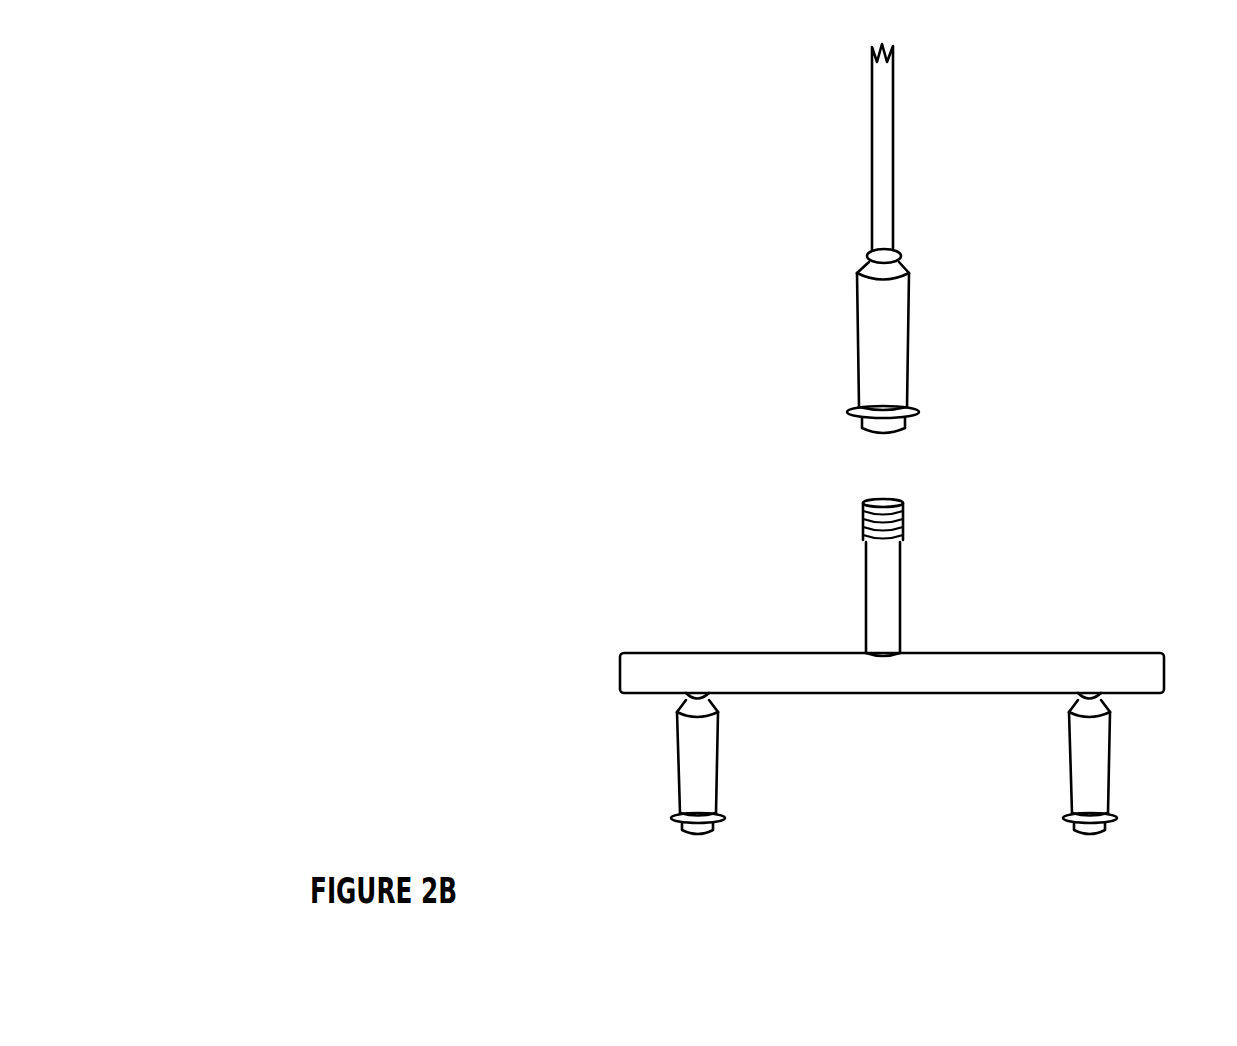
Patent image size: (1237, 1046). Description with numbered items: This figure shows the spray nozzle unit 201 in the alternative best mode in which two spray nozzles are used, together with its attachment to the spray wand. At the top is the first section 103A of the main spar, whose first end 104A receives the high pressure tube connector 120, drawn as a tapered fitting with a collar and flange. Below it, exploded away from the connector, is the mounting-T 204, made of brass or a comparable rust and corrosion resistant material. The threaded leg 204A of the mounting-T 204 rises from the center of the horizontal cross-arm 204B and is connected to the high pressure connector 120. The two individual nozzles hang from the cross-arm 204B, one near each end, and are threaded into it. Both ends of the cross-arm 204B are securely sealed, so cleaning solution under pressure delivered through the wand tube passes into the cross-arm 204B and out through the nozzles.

The first section 103A is at (948, 46).
The first end 104A is at (893, 213).
The high pressure tube connector 120 is at (910, 357).
The spray nozzle unit 201 is at (736, 421).
The mounting-T 204 is at (1066, 541).
The leg 204A is at (903, 545).
The cross-arm 204B is at (938, 668).